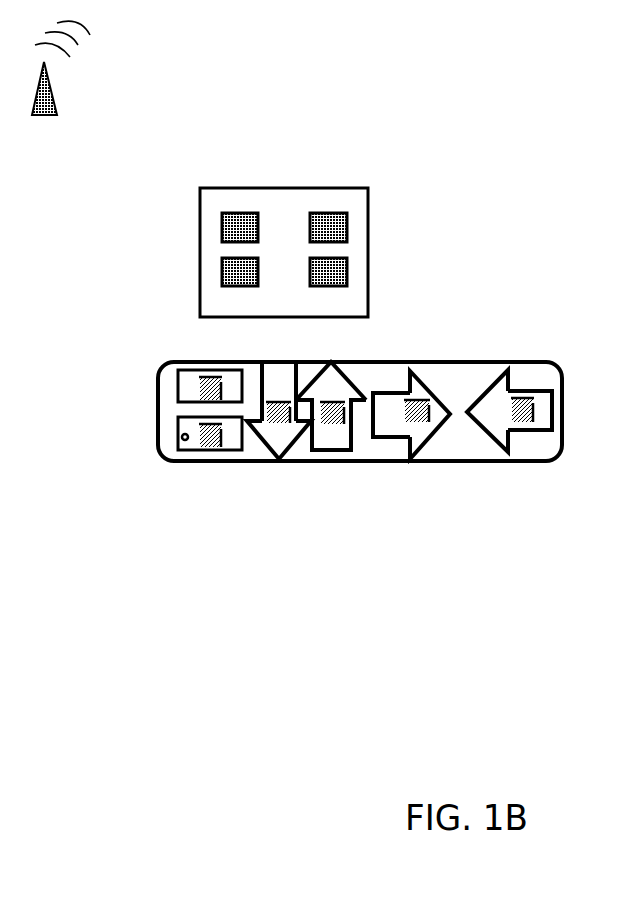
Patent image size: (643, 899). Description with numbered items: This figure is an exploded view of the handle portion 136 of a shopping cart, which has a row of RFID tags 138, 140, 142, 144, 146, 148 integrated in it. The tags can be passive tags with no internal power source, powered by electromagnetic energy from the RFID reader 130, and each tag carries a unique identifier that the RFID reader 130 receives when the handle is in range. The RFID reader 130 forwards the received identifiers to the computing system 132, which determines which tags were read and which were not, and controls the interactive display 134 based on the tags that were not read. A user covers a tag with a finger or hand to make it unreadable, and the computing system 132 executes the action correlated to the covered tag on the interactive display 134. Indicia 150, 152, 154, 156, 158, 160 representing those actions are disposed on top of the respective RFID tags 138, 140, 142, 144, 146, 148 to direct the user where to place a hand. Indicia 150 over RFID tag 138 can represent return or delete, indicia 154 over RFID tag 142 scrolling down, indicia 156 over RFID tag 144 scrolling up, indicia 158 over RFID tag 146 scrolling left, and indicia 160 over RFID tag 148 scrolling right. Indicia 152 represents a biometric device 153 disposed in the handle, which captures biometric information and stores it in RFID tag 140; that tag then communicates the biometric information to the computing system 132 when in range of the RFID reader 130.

The RFID reader 130 is at (52, 88).
The computing system 132 is at (383, 252).
The interactive display 134 is at (347, 271).
The handle portion 136 is at (325, 462).
The RFID tag 138 is at (198, 386).
The RFID tag 140 is at (171, 505).
The RFID tag 142 is at (277, 469).
The RFID tag 144 is at (370, 415).
The RFID tag 146 is at (382, 506).
The RFID tag 148 is at (543, 433).
The indicia 150 is at (178, 368).
The indicia 152 is at (181, 448).
The biometric device 153 is at (183, 440).
The indicia 154 is at (280, 460).
The indicia 156 is at (332, 380).
The indicia 158 is at (392, 436).
The indicia 160 is at (495, 398).